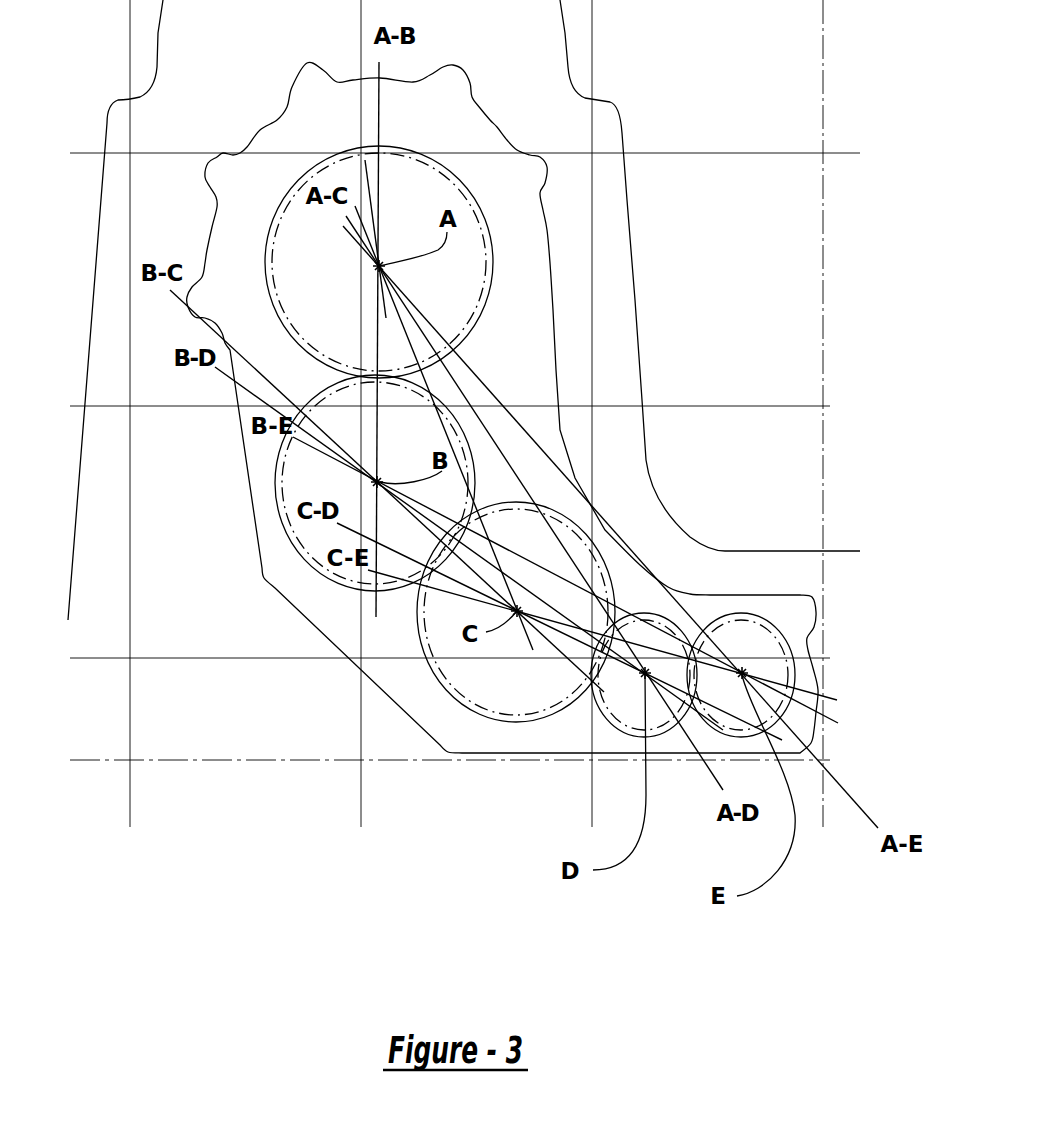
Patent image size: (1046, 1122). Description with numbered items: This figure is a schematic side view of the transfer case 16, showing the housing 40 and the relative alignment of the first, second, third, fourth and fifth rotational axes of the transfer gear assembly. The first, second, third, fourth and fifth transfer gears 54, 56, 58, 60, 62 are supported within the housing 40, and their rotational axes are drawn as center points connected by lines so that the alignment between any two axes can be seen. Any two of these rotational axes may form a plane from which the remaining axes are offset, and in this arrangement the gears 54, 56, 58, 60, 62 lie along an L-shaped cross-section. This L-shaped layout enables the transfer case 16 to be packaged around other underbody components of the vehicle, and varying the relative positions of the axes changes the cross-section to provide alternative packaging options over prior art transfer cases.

The transfer case 16 is at (576, 227).
The housing 40 is at (712, 40).
The first transfer gear 54 is at (487, 290).
The second transfer gear 56 is at (452, 420).
The third transfer gear 58 is at (563, 515).
The fourth transfer gear 60 is at (668, 616).
The fifth transfer gear 62 is at (776, 624).